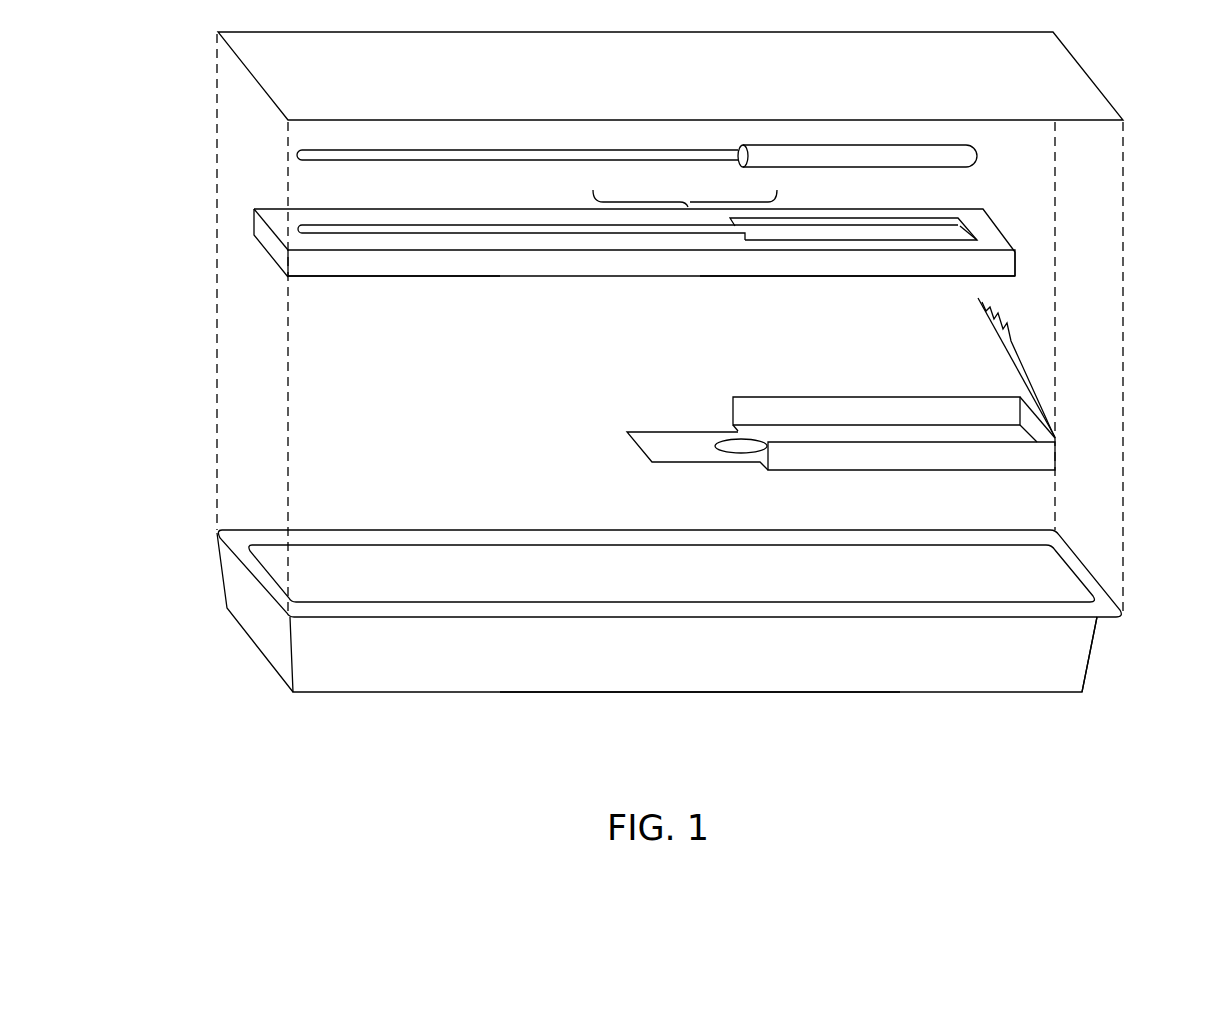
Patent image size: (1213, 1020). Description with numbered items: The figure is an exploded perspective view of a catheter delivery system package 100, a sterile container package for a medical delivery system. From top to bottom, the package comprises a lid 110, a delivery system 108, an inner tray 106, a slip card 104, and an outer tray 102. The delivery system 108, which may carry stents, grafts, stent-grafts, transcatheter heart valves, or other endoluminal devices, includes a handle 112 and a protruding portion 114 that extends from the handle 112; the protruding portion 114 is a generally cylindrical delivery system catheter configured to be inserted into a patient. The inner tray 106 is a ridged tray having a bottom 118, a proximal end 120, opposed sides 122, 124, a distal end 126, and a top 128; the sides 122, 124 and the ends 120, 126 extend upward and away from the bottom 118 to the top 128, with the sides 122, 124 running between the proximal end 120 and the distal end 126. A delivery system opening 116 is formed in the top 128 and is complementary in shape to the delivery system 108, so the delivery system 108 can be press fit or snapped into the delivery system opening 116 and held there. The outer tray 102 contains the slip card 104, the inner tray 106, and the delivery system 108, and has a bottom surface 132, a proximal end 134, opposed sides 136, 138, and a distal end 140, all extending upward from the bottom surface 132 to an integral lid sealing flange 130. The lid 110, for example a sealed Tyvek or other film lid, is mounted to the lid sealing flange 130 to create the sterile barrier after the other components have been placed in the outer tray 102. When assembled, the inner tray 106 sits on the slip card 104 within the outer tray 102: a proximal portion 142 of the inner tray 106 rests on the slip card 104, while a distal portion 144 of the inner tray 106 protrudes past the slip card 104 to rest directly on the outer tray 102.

The catheter delivery system package 100 is at (657, 411).
The outer tray 102 is at (657, 616).
The slip card 104 is at (863, 410).
The inner tray 106 is at (590, 252).
The delivery system 108 is at (688, 207).
The lid 110 is at (691, 81).
The handle 112 is at (775, 168).
The protruding portion 114 is at (605, 160).
The delivery system opening 116 is at (849, 229).
The bottom 118 is at (615, 280).
The proximal end 120 is at (995, 220).
The side 122 is at (415, 268).
The side 124 is at (254, 223).
The distal end 126 is at (265, 240).
The top 128 is at (313, 220).
The lid sealing flange 130 is at (520, 542).
The bottom surface 132 is at (608, 690).
The proximal end 134 is at (1090, 650).
The side 136 is at (780, 668).
The side 138 is at (225, 578).
The distal end 140 is at (265, 620).
The proximal portion 142 is at (893, 280).
The distal portion 144 is at (353, 278).